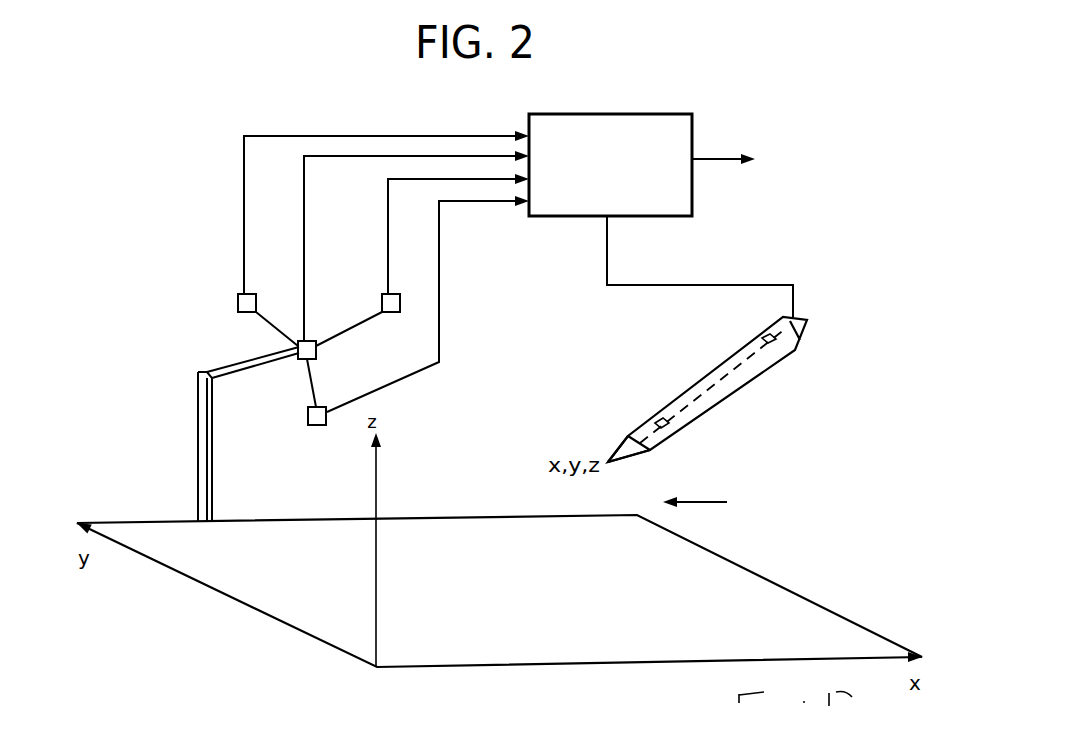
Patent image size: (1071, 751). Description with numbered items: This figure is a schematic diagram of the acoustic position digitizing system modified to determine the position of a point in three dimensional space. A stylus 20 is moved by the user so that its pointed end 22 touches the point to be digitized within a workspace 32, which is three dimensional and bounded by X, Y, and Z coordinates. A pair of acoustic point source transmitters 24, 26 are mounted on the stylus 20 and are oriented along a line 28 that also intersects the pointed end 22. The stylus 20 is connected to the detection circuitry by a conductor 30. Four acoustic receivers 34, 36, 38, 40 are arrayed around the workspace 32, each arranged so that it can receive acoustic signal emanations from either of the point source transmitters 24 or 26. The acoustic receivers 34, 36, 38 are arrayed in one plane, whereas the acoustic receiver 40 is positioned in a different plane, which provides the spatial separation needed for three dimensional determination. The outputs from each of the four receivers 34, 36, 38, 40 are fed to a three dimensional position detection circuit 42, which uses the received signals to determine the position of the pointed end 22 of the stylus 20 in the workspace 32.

The stylus 20 is at (746, 356).
The pointed end 22 is at (609, 464).
The acoustic point source transmitter 24 is at (780, 352).
The acoustic point source transmitter 26 is at (673, 431).
The line 28 is at (737, 363).
The conductor 30 is at (709, 285).
The workspace 32 is at (715, 504).
The acoustic receiver 34 is at (238, 303).
The acoustic receiver 36 is at (382, 301).
The acoustic receiver 38 is at (318, 426).
The acoustic receiver 40 is at (317, 350).
The three dimensional position detection circuit 42 is at (693, 119).